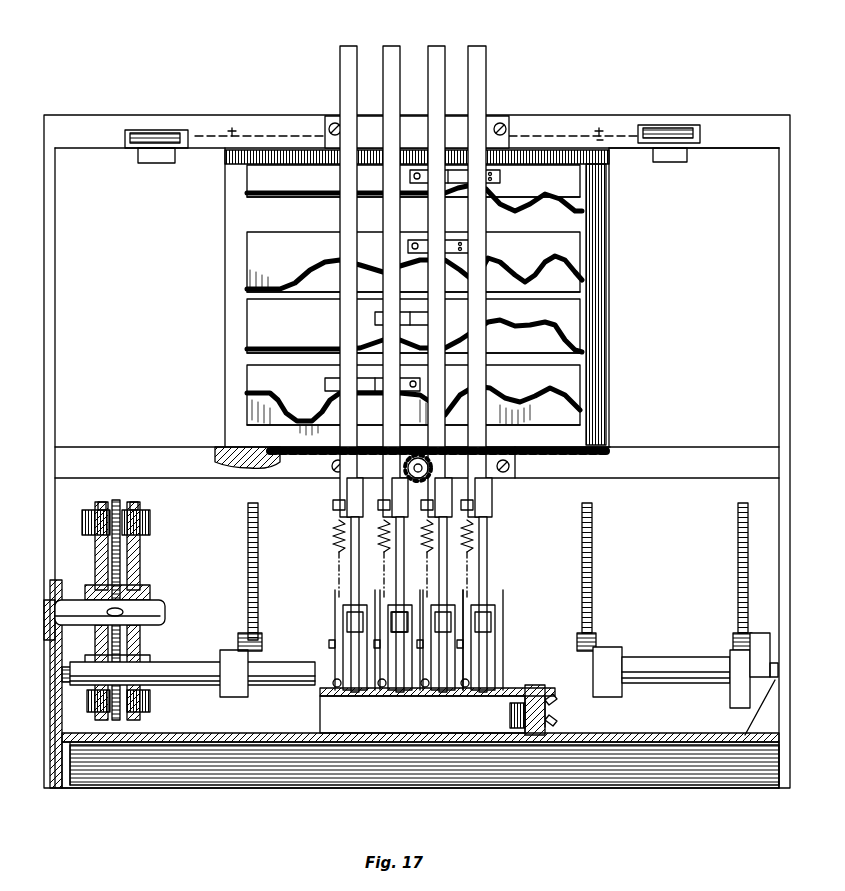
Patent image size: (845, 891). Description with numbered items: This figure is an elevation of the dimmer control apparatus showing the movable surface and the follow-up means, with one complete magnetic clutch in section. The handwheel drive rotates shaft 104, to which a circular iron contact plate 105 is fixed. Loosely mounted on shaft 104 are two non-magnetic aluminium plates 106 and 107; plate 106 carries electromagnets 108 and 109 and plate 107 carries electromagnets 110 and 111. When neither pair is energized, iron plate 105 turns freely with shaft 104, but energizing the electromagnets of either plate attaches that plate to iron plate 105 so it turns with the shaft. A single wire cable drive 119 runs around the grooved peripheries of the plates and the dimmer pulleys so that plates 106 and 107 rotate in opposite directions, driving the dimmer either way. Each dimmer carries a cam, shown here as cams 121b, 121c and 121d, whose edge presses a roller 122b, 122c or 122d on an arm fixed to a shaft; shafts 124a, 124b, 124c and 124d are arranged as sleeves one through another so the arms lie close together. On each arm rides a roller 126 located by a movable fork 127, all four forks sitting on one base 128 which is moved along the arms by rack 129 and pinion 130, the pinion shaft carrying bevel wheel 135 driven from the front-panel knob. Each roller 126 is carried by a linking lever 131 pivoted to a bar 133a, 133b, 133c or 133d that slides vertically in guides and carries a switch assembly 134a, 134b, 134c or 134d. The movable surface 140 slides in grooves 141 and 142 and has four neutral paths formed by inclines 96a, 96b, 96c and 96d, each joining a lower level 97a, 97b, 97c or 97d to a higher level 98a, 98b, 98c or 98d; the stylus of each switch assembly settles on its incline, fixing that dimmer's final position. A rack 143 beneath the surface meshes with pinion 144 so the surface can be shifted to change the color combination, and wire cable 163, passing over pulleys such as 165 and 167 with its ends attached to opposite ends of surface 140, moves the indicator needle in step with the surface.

The bar 133a is at (349, 47).
The bar 133b is at (391, 47).
The bar 133c is at (437, 47).
The bar 133d is at (491, 35).
The switch assembly 134a is at (387, 378).
The switch assembly 134b is at (440, 317).
The switch assembly 134c is at (405, 246).
The switch assembly 134d is at (420, 170).
The incline 96a is at (250, 192).
The incline 96b is at (250, 288).
The incline 96c is at (250, 349).
The incline 96d is at (268, 406).
The lower level 97a is at (262, 211).
The lower level 97b is at (333, 272).
The lower level 97c is at (545, 330).
The lower level 97d is at (510, 416).
The higher level 98a is at (250, 176).
The higher level 98b is at (260, 244).
The higher level 98c is at (258, 311).
The higher level 98d is at (262, 379).
The pulley 165 is at (152, 130).
The wire cable 163 is at (209, 133).
The pulley 167 is at (667, 127).
The groove 141 is at (630, 158).
The movable surface 140 is at (608, 292).
The groove 142 is at (622, 448).
The rack 143 is at (553, 458).
The pinion 144 is at (433, 467).
The wire cable drive 119 is at (101, 503).
The circular iron contact plate 105 is at (119, 498).
The electromagnet 110 is at (150, 530).
The electromagnet 108 is at (98, 536).
The circular plate 106 is at (96, 577).
The circular plate 107 is at (140, 577).
The shaft 104 is at (150, 612).
The electromagnet 111 is at (150, 709).
The electromagnet 109 is at (88, 707).
The shaft 124a is at (72, 675).
The shaft 124b is at (254, 686).
The shaft 124c is at (647, 664).
The shaft 124d is at (420, 765).
The cam 121b is at (259, 520).
The cam 121c is at (582, 572).
The cam 121d is at (738, 573).
The roller 122b is at (262, 642).
The roller 122c is at (578, 639).
The roller 122d is at (735, 633).
The linking lever 131 is at (396, 536).
The roller 126 is at (401, 610).
The fork 127 is at (420, 696).
The base 128 is at (348, 698).
The rack 129 is at (520, 694).
The pinion 130 is at (510, 720).
The bevel wheel 135 is at (552, 725).